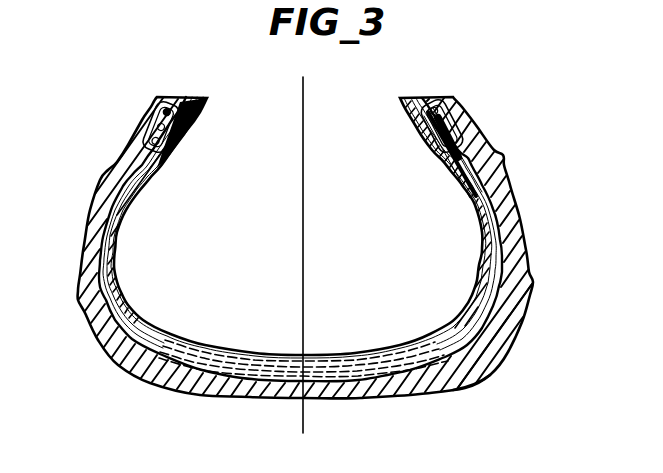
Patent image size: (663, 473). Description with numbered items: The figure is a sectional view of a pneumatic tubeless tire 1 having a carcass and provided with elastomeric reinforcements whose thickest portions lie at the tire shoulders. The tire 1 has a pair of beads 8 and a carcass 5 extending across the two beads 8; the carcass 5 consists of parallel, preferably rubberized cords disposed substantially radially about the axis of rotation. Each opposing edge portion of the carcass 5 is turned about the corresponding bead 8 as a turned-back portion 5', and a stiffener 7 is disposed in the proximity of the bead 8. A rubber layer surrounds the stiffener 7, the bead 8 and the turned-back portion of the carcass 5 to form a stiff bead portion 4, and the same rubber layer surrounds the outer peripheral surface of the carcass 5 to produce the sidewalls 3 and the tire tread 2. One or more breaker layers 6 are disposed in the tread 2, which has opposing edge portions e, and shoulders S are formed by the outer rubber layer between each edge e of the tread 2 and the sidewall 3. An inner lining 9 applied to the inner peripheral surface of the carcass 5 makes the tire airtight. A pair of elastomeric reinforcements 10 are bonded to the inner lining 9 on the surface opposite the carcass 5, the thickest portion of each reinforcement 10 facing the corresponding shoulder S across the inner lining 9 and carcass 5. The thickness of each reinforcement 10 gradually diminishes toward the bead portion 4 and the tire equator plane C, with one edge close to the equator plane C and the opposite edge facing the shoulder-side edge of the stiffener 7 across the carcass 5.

The tubeless tire 1 is at (101, 171).
The tire tread 2 is at (182, 393).
The sidewall 3 is at (82, 263).
The bead portion 4 is at (497, 150).
The carcass 5 is at (334, 223).
The carcass ply turn-up 5' is at (263, 226).
The breaker layer 6 is at (230, 387).
The stiffener 7 is at (457, 127).
The bead 8 is at (157, 108).
The inner lining 9 is at (490, 307).
The elastomeric reinforcement 10 is at (457, 313).
The shoulder S is at (500, 360).
The edge portion of the tread e is at (470, 387).
The tire equator plane C is at (303, 252).